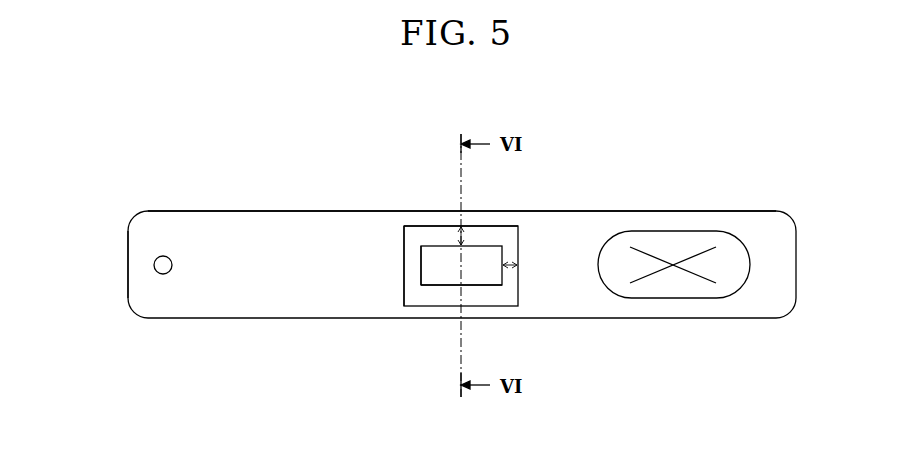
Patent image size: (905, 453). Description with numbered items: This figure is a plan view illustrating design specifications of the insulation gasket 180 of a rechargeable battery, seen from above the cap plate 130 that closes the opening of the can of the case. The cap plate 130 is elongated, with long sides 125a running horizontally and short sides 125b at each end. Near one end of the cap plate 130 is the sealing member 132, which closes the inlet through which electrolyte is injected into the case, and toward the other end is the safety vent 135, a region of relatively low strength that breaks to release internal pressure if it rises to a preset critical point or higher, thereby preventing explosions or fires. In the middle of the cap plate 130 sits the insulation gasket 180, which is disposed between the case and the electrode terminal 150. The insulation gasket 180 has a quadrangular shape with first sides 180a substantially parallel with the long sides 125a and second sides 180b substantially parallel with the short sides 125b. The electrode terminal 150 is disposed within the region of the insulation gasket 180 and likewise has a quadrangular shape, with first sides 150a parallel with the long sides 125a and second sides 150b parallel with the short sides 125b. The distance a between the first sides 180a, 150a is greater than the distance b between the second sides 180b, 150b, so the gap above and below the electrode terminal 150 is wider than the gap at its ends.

The cap plate 130 is at (763, 218).
The long sides of the case 125a is at (254, 211).
The short sides of the case 125b is at (128, 264).
The sealing member 132 is at (163, 256).
The safety vent 135 is at (673, 237).
The insulation gasket 180 is at (506, 233).
The first sides of the insulation gasket 180a is at (437, 226).
The second sides of the insulation gasket 180b is at (404, 252).
The electrode terminal 150 is at (487, 277).
The first sides of the electrode terminal 150a is at (461, 285).
The second sides of the electrode terminal 150b is at (420, 265).
The distance between first sides a is at (463, 232).
The distance between second sides b is at (518, 265).